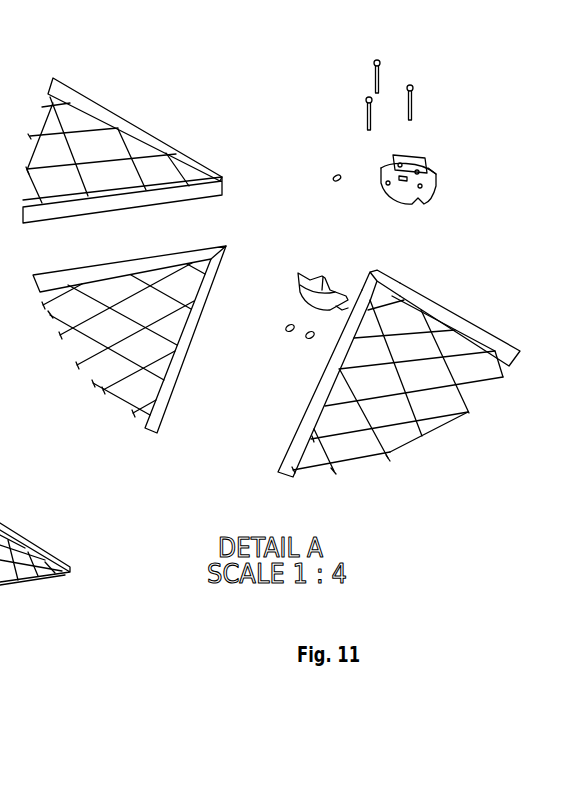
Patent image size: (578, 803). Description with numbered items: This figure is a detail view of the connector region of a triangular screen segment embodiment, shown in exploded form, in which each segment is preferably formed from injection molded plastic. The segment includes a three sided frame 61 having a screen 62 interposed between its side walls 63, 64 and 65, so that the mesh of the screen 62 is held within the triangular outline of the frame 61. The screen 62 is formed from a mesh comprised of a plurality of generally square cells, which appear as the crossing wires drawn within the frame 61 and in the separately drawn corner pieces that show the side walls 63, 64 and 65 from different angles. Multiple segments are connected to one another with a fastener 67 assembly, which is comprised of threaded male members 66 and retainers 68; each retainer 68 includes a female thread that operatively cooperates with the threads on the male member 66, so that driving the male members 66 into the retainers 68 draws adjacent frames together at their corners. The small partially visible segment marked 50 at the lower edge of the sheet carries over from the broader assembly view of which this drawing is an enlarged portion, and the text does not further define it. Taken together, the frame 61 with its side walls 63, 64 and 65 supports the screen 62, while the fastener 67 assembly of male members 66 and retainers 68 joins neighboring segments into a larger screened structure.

The modular fence panel assembly 50 is at (35, 593).
The three sided frame 61 is at (468, 320).
The screen 62 is at (392, 425).
The side wall 63 is at (227, 248).
The side wall 64 is at (278, 452).
The side wall 65 is at (402, 283).
The threaded male member 66 is at (381, 63).
The fastener assembly 67 is at (428, 176).
The retainer 68 is at (287, 333).